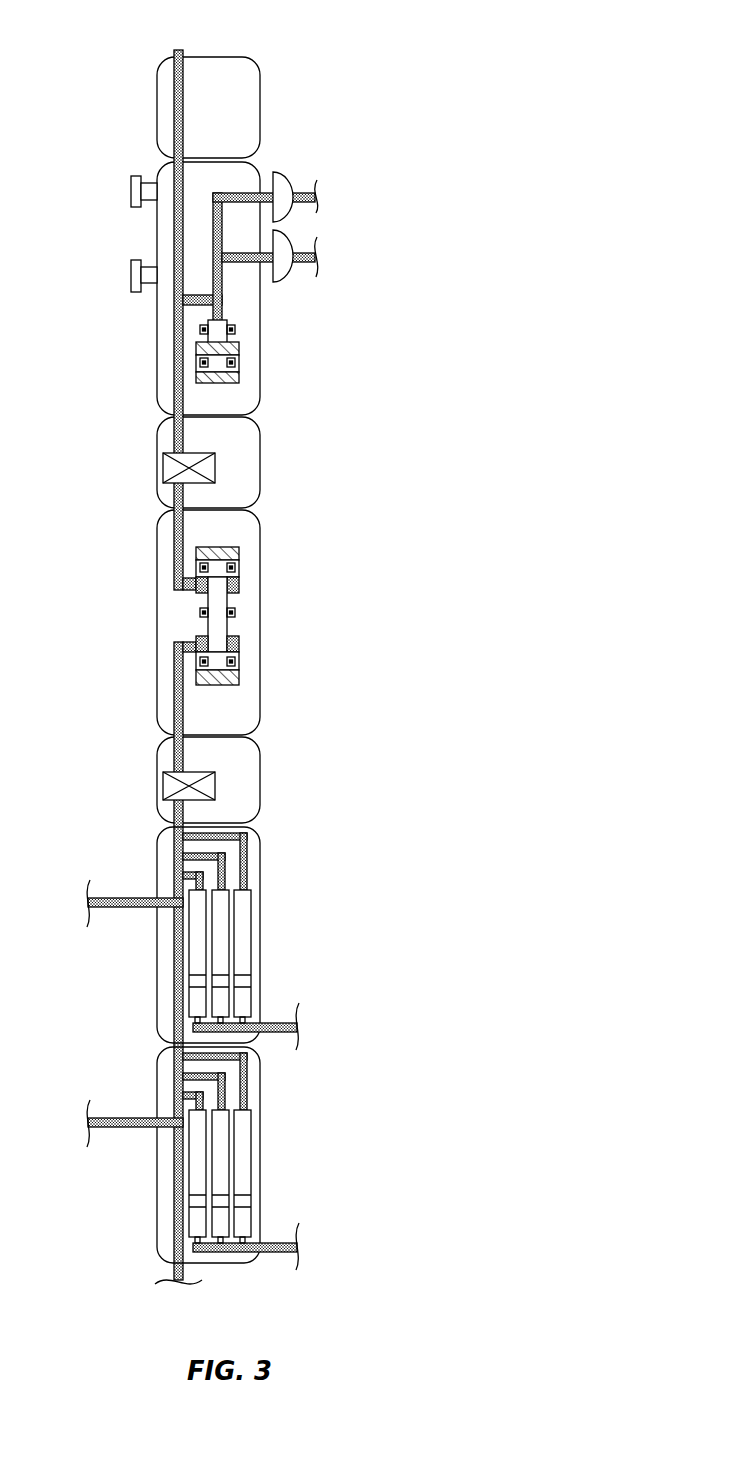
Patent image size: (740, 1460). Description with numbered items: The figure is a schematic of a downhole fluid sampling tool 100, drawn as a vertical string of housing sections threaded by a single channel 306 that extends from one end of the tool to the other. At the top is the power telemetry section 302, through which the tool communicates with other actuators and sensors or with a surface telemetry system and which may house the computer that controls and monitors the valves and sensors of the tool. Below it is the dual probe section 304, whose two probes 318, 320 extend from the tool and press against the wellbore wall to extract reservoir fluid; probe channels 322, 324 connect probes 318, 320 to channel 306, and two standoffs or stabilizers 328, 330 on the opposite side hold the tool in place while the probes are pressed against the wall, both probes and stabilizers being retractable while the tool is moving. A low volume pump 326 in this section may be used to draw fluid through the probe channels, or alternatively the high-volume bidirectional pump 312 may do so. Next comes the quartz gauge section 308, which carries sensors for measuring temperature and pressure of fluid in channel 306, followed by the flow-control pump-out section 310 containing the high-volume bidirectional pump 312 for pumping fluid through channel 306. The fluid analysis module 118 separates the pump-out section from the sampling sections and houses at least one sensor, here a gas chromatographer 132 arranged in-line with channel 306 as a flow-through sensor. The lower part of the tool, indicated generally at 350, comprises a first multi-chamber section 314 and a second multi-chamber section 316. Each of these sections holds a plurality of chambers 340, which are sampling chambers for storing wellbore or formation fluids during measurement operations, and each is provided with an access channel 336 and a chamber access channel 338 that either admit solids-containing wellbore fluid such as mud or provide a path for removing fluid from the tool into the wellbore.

The downhole fluid sampling tool 100 is at (354, 44).
The power telemetry section 302 is at (157, 105).
The dual probe section 304 is at (157, 350).
The channel 306 is at (173, 390).
The quartz gauge section 308 is at (157, 460).
The flow-control pump-out section 310 is at (153, 693).
The high-volume bidirectional pump 312 is at (200, 612).
The fluid analysis module 118 is at (157, 783).
The gas chromatographer 132 is at (215, 785).
The first multi-chamber section 314 is at (157, 853).
The second multi-chamber section 316 is at (157, 1070).
The probe 318 is at (288, 182).
The probe 320 is at (290, 240).
The probe channel 322 is at (240, 193).
The probe channel 324 is at (243, 262).
The low volume pump 326 is at (240, 360).
The stabilizer 328 is at (131, 190).
The stabilizer 330 is at (131, 277).
The access channel 336 is at (130, 897).
The chamber access channel 338 is at (270, 1022).
The chambers 340 is at (208, 920).
The sample carrier section 350 is at (424, 1036).